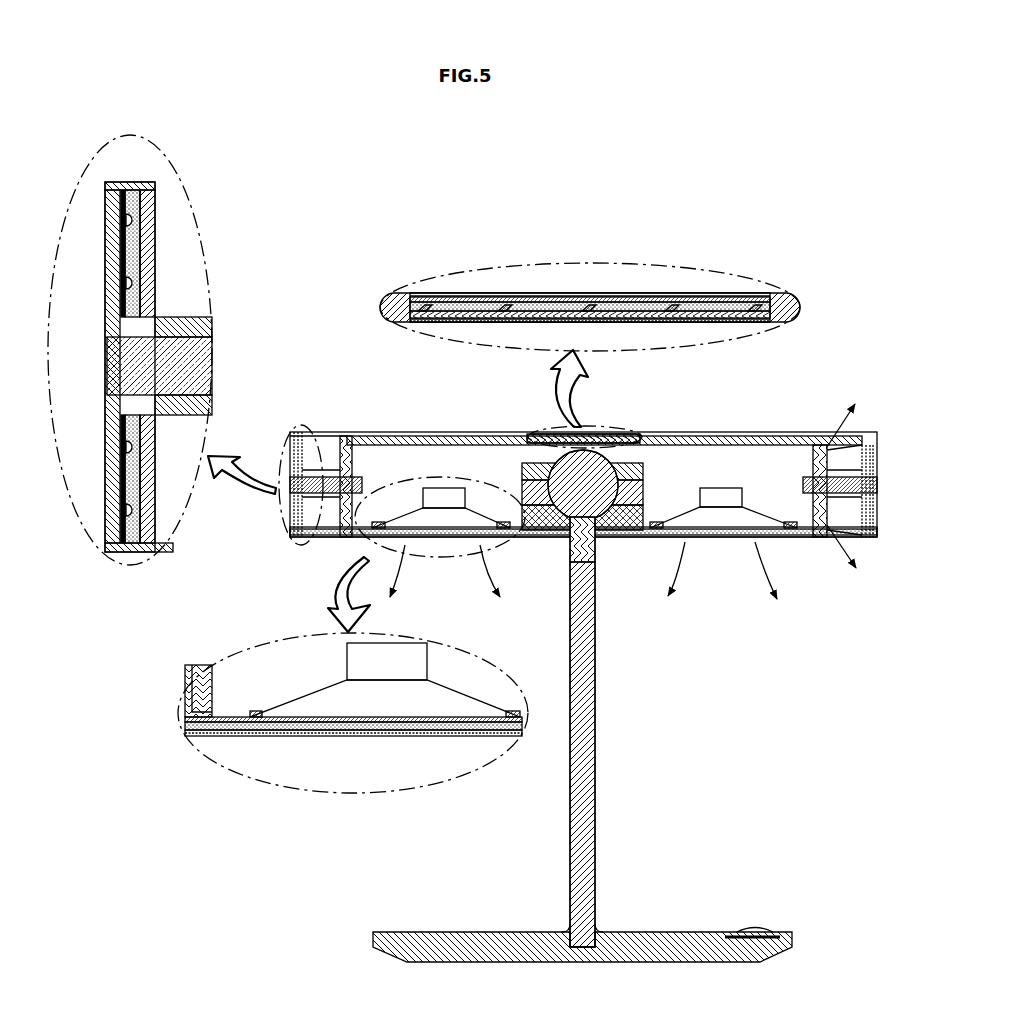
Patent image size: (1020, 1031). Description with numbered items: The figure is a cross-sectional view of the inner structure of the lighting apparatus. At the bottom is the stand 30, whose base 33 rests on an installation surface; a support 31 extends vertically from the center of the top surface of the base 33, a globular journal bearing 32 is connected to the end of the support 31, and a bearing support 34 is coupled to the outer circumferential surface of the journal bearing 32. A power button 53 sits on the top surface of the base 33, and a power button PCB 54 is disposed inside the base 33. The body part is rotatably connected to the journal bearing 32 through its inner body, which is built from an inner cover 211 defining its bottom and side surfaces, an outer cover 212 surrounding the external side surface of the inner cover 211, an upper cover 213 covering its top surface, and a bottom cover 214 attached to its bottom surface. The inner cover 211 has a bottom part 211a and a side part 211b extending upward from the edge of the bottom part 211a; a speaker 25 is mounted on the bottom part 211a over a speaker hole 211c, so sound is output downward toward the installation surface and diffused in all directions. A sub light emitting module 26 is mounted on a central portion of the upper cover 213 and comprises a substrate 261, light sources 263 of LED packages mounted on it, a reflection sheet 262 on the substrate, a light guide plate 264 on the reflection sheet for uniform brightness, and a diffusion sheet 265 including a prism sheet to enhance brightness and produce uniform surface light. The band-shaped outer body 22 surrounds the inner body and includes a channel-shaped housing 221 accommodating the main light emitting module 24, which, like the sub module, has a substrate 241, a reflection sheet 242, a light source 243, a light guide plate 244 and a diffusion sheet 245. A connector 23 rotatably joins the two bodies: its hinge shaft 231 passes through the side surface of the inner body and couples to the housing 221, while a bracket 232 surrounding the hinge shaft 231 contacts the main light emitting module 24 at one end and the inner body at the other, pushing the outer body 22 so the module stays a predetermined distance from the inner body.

The outer body 22 is at (240, 336).
The housing 221 is at (135, 187).
The main light emitting module 24 is at (228, 356).
The substrate 241 is at (130, 192).
The reflection sheet 242 is at (140, 203).
The diffusion sheet 245 is at (135, 238).
The light source 243 is at (127, 252).
The light guide plate 244 is at (133, 303).
The connector 23 is at (226, 366).
The bracket 232 is at (213, 321).
The hinge shaft 231 is at (200, 365).
The outer cover 212 is at (346, 458).
The upper cover 213 is at (418, 440).
The inner cover 211 is at (531, 706).
The bottom part 211a is at (245, 724).
The side part 211b is at (228, 725).
The speaker hole 211c is at (314, 718).
The bottom cover 214 is at (523, 659).
The speaker 25 is at (318, 697).
The sub light emitting module 26 is at (590, 247).
The substrate 261 is at (692, 302).
The reflection sheet 262 is at (650, 305).
The light source 263 is at (590, 310).
The light guide plate 264 is at (483, 302).
The diffusion sheet 265 is at (705, 210).
The stand 30 is at (582, 739).
The support 31 is at (597, 727).
The journal bearing 32 is at (601, 505).
The base 33 is at (670, 932).
The bearing support 34 is at (651, 498).
The power button 53 is at (755, 928).
The power button PCB 54 is at (751, 946).